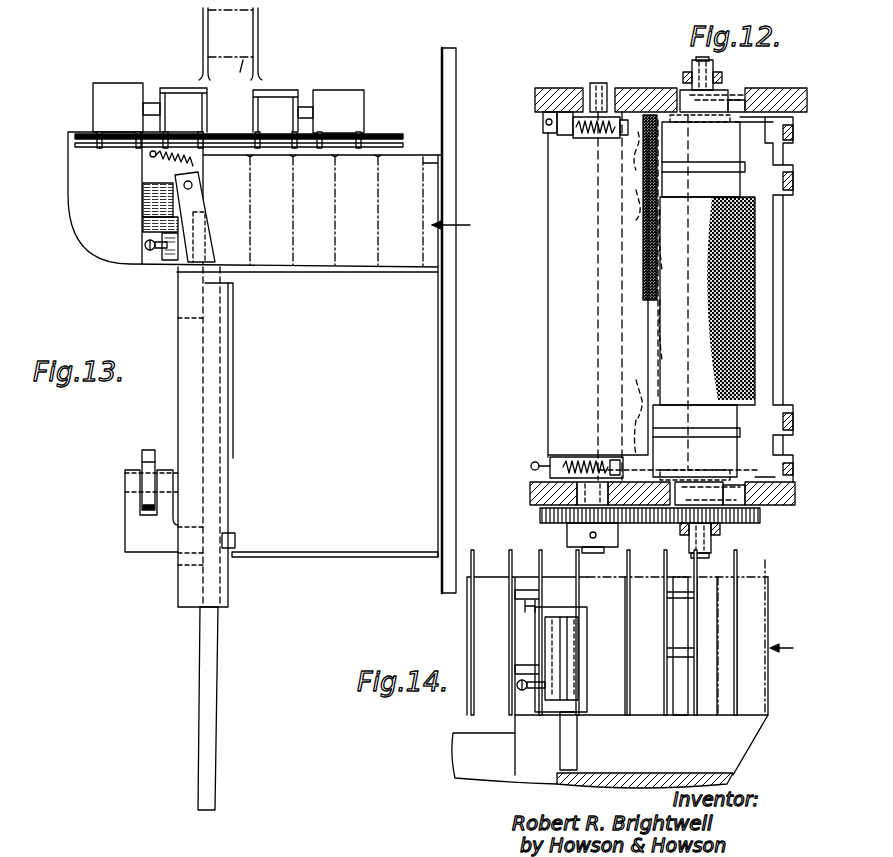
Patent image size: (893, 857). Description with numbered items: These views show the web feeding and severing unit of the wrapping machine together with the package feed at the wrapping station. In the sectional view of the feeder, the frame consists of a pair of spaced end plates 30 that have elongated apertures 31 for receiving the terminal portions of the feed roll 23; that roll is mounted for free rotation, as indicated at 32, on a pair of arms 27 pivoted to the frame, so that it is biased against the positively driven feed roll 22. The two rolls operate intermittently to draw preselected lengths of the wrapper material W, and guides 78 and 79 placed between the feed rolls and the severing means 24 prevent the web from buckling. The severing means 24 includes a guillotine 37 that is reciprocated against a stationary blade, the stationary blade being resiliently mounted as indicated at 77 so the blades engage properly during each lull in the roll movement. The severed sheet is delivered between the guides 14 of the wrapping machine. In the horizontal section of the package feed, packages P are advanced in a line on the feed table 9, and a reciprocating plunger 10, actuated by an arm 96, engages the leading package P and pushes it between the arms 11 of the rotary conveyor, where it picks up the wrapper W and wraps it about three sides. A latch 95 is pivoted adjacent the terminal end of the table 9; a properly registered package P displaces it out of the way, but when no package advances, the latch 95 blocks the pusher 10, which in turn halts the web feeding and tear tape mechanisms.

In FIG. 13, the feed table 9 is at (330, 265).
In FIG. 14, the feed table 9 is at (740, 738).
In FIG. 13, the reciprocating plunger 10 is at (218, 284).
In FIG. 13, the arms 11 is at (203, 40).
In FIG. 13, the guides 14 is at (200, 134).
In FIG. 14, the guides 14 is at (510, 560).
In FIG. 12, the feed roller 22 is at (548, 270).
In FIG. 12, the feed roller 23 is at (755, 215).
In FIG. 12, the severing means 24 is at (805, 326).
In FIG. 12, the arms 27 is at (720, 78).
In FIG. 12, the end plates 30 is at (535, 96).
In FIG. 12, the elongated apertures 31 is at (745, 105).
In FIG. 12, the roll mounting 32 is at (692, 64).
In FIG. 12, the guillotine 37 is at (680, 464).
In FIG. 12, the resilient mounting 77 is at (592, 138).
In FIG. 12, the guide 78 is at (636, 210).
In FIG. 12, the guide 79 is at (660, 232).
In FIG. 13, the latch 95 is at (211, 236).
In FIG. 14, the latch 95 is at (588, 647).
In FIG. 13, the arm 96 is at (150, 450).
In FIG. 13, the wrapper material W is at (383, 140).
In FIG. 12, the wrapper material W is at (648, 266).
In FIG. 13, the package P is at (378, 265).
In FIG. 14, the package P is at (590, 578).